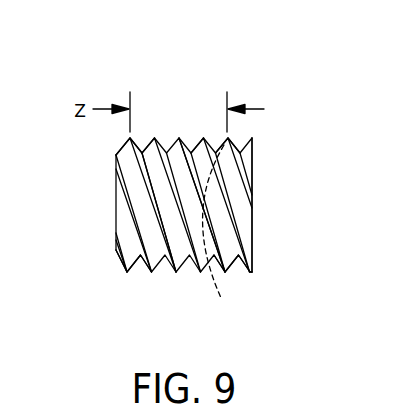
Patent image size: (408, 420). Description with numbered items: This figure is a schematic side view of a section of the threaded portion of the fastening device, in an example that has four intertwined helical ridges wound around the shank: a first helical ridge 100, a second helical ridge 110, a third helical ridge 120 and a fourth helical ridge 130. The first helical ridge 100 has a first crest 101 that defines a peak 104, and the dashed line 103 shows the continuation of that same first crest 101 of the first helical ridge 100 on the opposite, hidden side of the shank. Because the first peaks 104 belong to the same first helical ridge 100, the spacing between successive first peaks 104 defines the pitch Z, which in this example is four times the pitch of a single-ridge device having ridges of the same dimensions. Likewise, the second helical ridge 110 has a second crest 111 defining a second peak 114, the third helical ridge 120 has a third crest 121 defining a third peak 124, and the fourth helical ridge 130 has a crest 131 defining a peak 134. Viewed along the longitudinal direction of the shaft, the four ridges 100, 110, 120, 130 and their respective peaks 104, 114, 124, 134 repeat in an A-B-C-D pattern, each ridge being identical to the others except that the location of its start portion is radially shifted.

The first helical ridge 100 is at (124, 163).
The first crest 101 is at (141, 252).
The dashed line 103 is at (220, 235).
The peak 104 is at (129, 139).
The second helical ridge 110 is at (156, 168).
The second crest 111 is at (152, 150).
The second peak 114 is at (151, 139).
The third helical ridge 120 is at (184, 187).
The third crest 121 is at (196, 148).
The third peak 124 is at (180, 138).
The fourth helical ridge 130 is at (248, 232).
The crest 131 is at (235, 216).
The peak 134 is at (203, 138).